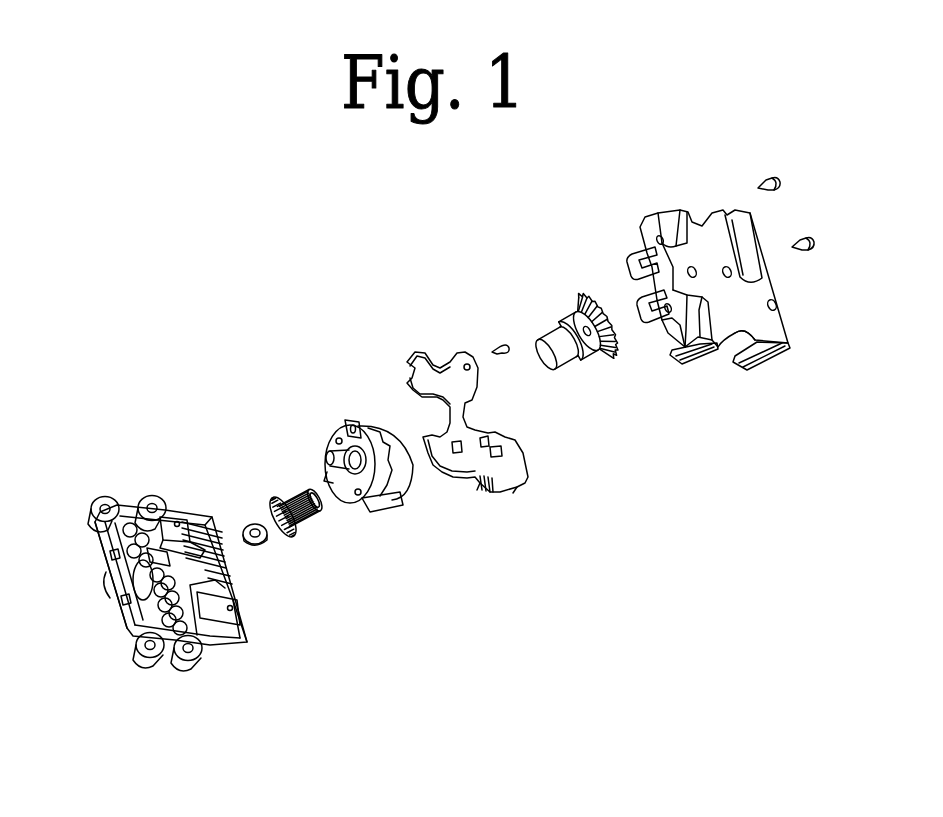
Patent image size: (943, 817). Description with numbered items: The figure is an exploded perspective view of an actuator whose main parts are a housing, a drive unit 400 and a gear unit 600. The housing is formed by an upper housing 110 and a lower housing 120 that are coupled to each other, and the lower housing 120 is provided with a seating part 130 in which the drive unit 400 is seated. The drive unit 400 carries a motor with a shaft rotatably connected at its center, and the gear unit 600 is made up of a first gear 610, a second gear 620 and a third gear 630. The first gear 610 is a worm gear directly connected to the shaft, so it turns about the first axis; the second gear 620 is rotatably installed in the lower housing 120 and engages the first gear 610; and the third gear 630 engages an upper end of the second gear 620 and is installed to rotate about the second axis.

The upper housing 110 is at (740, 220).
The lower housing 120 is at (120, 582).
The seating part 130 is at (173, 498).
The drive unit 400 is at (325, 437).
The gear unit 600 is at (625, 447).
The first gear 610 is at (347, 465).
The second gear 620 is at (297, 530).
The third gear 630 is at (572, 353).